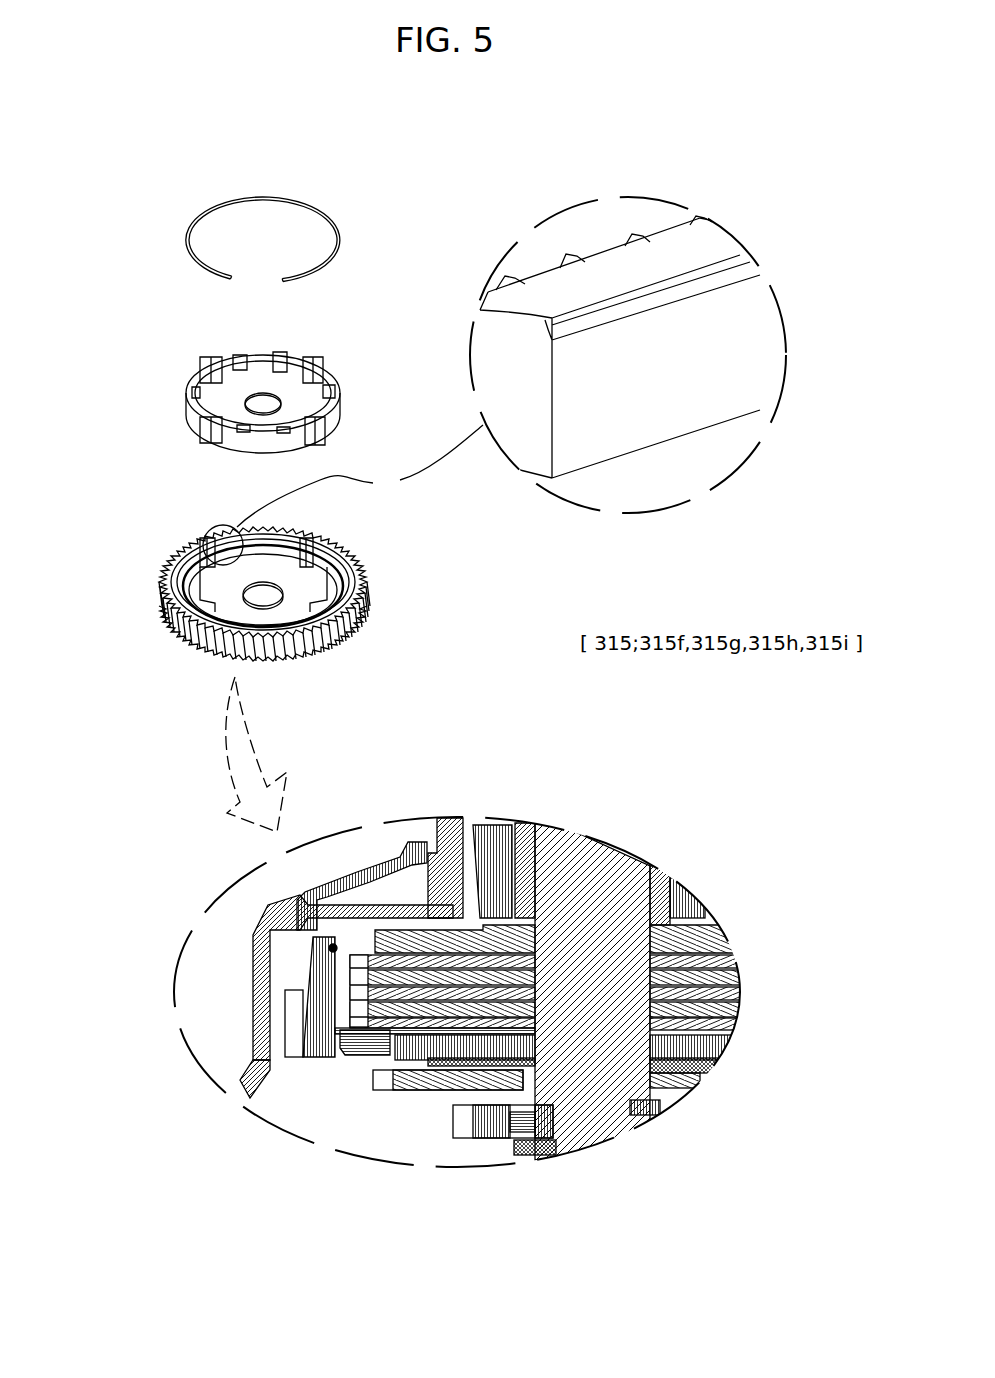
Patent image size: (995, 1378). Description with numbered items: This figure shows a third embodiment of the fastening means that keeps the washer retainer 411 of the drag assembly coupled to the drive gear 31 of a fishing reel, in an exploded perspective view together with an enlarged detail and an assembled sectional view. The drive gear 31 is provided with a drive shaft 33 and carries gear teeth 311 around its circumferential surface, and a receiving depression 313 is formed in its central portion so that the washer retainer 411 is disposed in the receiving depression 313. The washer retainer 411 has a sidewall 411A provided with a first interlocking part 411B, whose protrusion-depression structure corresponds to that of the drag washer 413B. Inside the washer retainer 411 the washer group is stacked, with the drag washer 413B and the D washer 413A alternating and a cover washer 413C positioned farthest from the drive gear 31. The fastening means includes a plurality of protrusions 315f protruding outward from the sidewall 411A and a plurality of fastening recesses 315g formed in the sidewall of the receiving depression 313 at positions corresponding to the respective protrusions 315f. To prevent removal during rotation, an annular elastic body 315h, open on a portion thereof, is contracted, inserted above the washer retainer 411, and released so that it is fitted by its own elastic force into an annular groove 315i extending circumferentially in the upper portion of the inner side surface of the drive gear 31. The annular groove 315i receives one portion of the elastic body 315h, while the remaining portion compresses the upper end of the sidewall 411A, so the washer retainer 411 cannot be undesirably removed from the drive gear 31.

The drive gear 31 is at (444, 618).
The drive shaft 33 is at (608, 862).
The gear teeth 311 is at (360, 616).
The receiving depression 313 is at (288, 568).
The protrusions 315f is at (216, 372).
The fastening recesses 315g is at (213, 538).
The annular elastic body 315h is at (276, 197).
The annular groove 315i is at (716, 286).
The washer retainer 411 is at (278, 745).
The sidewall 411A is at (332, 420).
The first interlocking part 411B is at (300, 366).
The D washer 413A is at (708, 1030).
The drag washer 413B is at (738, 1012).
The cover washer 413C is at (700, 940).